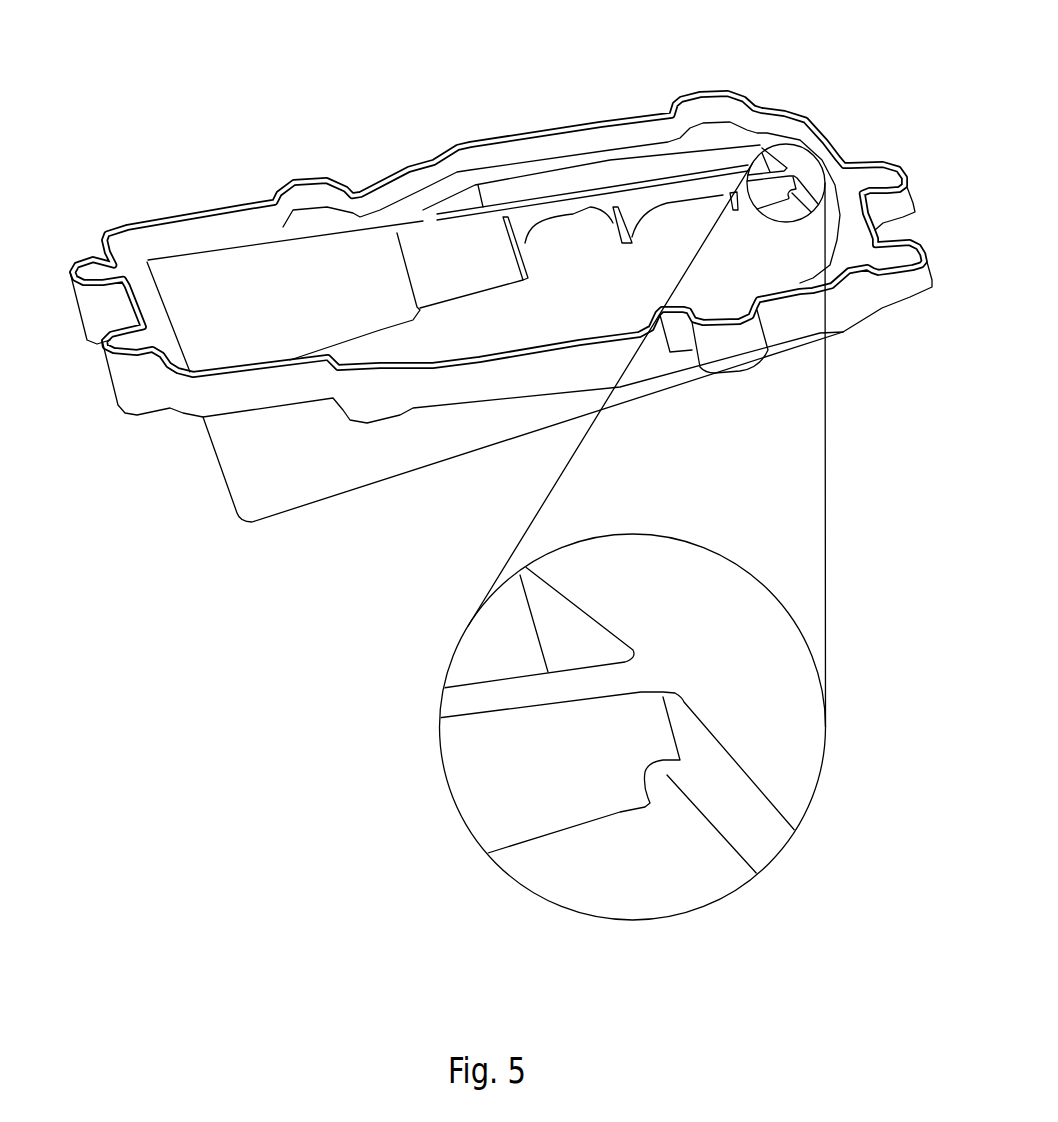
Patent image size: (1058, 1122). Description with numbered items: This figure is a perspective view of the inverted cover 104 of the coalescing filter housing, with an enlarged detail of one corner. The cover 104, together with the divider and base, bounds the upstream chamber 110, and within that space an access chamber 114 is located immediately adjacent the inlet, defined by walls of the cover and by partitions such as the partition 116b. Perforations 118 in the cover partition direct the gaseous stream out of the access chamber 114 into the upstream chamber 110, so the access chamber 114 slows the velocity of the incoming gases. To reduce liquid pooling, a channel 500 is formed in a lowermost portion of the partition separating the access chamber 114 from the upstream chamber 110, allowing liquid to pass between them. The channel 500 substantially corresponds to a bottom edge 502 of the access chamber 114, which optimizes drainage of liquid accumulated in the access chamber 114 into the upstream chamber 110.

The cover 104 is at (763, 62).
The upstream chamber 110 is at (720, 297).
The access chamber 114 is at (523, 190).
The base partition 116b is at (703, 190).
The perforations 118 is at (670, 210).
The channel 500 is at (795, 193).
The bottom edge 502 is at (591, 617).